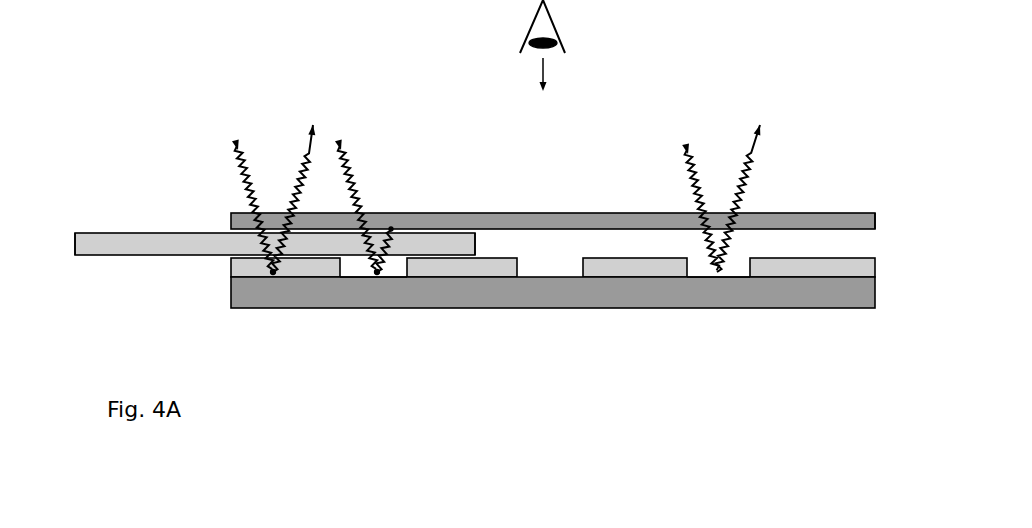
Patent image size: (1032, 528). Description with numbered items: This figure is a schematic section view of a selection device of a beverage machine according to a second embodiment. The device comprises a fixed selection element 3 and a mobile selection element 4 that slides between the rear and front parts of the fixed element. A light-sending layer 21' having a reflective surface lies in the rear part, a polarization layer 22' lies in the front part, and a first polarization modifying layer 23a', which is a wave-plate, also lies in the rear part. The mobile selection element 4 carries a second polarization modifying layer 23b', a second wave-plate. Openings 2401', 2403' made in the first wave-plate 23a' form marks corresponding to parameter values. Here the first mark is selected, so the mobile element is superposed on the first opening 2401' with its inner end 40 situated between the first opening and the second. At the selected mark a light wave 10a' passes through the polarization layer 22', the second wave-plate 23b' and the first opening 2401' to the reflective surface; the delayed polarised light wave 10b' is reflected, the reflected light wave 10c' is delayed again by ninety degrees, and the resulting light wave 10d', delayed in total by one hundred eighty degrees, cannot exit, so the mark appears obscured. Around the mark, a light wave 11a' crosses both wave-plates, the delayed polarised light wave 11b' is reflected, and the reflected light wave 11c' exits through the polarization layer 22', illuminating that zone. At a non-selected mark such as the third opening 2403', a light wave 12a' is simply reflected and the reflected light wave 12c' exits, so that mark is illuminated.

The fixed selection element 3 is at (889, 243).
The mobile selection element 4 is at (60, 246).
The inner end of the mobile selection element 40 is at (485, 243).
The light-sending layer 21' is at (521, 300).
The polarization layer 22' is at (521, 209).
The first polarization modifying layer 23a' is at (513, 274).
The second polarization modifying layer 23b' is at (275, 213).
The light wave 10a' is at (374, 173).
The delayed polarised light wave 10b' is at (351, 309).
The reflected light wave 10c' is at (414, 299).
The delayed light wave 10d' is at (427, 199).
The light wave 11a' is at (271, 173).
The delayed polarised light wave 11b' is at (249, 309).
The reflected light wave 11c' is at (305, 253).
The light wave 12a' is at (719, 176).
The reflected light wave 12c' is at (752, 231).
The first opening 2401' is at (405, 303).
The third opening 2403' is at (696, 314).